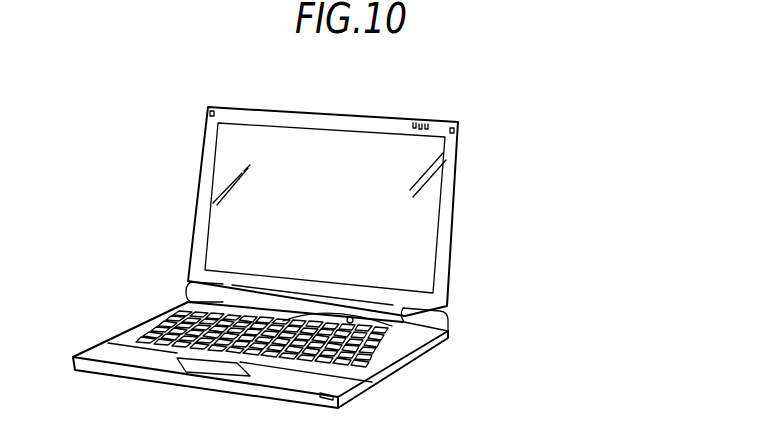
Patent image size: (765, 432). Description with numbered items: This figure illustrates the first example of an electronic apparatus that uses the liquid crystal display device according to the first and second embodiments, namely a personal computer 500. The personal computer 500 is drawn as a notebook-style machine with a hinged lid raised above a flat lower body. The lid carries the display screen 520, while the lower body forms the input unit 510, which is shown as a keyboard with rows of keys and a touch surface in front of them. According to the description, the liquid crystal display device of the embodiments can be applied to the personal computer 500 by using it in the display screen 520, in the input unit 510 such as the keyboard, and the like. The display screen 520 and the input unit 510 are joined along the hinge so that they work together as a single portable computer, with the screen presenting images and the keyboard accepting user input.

The PC (Personal Computer) 500 is at (543, 156).
The display screen 520 is at (318, 208).
The input unit 510 is at (448, 330).